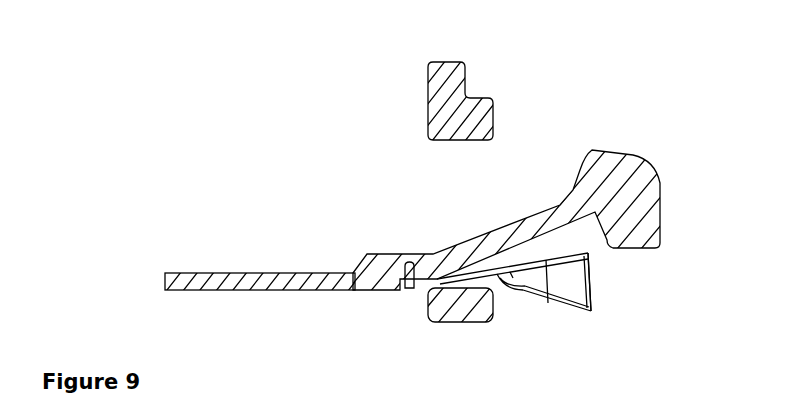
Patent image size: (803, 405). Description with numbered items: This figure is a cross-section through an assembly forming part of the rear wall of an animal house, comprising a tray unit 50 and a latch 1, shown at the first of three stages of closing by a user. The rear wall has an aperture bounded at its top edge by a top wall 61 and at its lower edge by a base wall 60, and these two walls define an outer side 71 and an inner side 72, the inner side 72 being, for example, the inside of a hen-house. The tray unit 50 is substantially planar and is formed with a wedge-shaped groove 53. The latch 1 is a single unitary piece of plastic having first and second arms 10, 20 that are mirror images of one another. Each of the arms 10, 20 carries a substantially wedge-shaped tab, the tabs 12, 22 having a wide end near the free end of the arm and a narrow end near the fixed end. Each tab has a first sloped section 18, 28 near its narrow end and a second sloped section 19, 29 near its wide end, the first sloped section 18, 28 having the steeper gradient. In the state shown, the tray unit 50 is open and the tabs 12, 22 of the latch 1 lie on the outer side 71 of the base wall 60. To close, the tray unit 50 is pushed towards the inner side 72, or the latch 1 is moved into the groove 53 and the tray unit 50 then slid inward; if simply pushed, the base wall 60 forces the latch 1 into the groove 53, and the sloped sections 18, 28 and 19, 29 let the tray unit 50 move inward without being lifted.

The latch 1 is at (606, 311).
The first / second sheet component 10, 20 is at (591, 262).
The sheet section 12, 22 is at (568, 288).
The bent end portion 18, 28 is at (512, 293).
The folded edge 19, 29 is at (549, 299).
The tray unit 50 is at (165, 283).
The wedge-shaped groove 53 is at (580, 225).
The base wall 60 is at (428, 310).
The top wall 61 is at (430, 84).
The outer side 71 is at (529, 61).
The inner side 72 is at (322, 78).